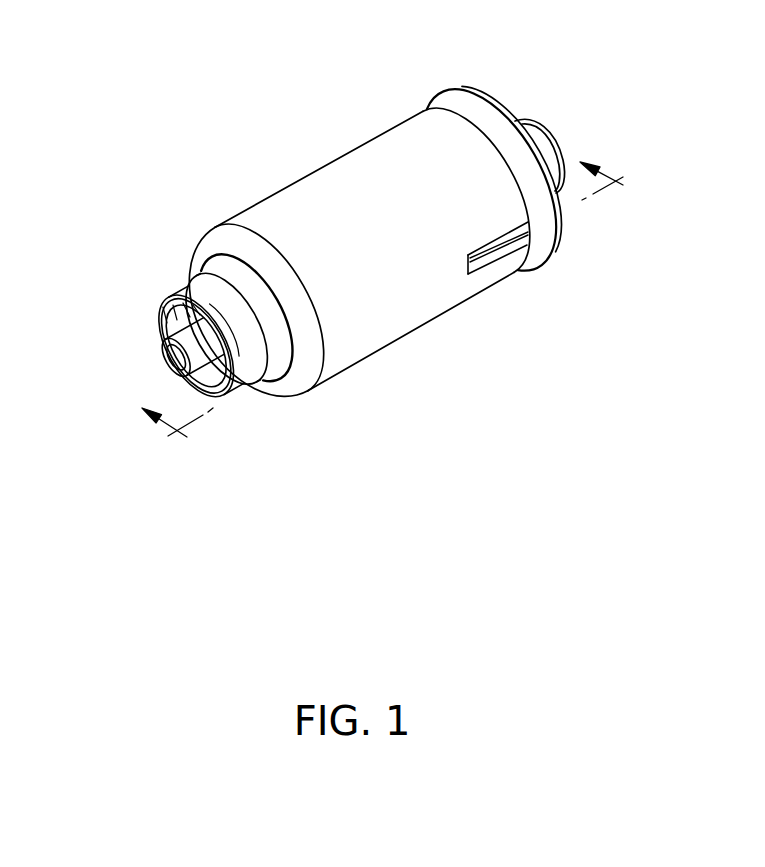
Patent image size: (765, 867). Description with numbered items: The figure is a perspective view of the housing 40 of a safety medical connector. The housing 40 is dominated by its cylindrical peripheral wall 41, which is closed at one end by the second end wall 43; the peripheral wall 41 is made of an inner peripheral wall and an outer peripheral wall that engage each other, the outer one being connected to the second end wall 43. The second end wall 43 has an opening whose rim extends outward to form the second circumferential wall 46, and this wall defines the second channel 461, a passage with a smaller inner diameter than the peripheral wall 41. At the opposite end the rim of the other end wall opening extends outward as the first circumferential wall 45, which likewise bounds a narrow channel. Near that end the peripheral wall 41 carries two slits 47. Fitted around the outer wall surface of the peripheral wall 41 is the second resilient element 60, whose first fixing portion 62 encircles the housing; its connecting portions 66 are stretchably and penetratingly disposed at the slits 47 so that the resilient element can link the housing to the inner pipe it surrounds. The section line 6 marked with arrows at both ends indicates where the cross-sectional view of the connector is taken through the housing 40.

The housing 40 is at (361, 254).
The peripheral wall 41 is at (323, 200).
The second end wall 43 is at (303, 378).
The first circumferential wall 45 is at (537, 120).
The second circumferential wall 46 is at (192, 332).
The second channel 461 is at (177, 357).
The slits 47 is at (555, 297).
The second resilient element 60 is at (530, 156).
The first fixing portion 62 is at (543, 225).
The connecting portions 66 is at (525, 233).
The section line 6- 6 is at (394, 308).